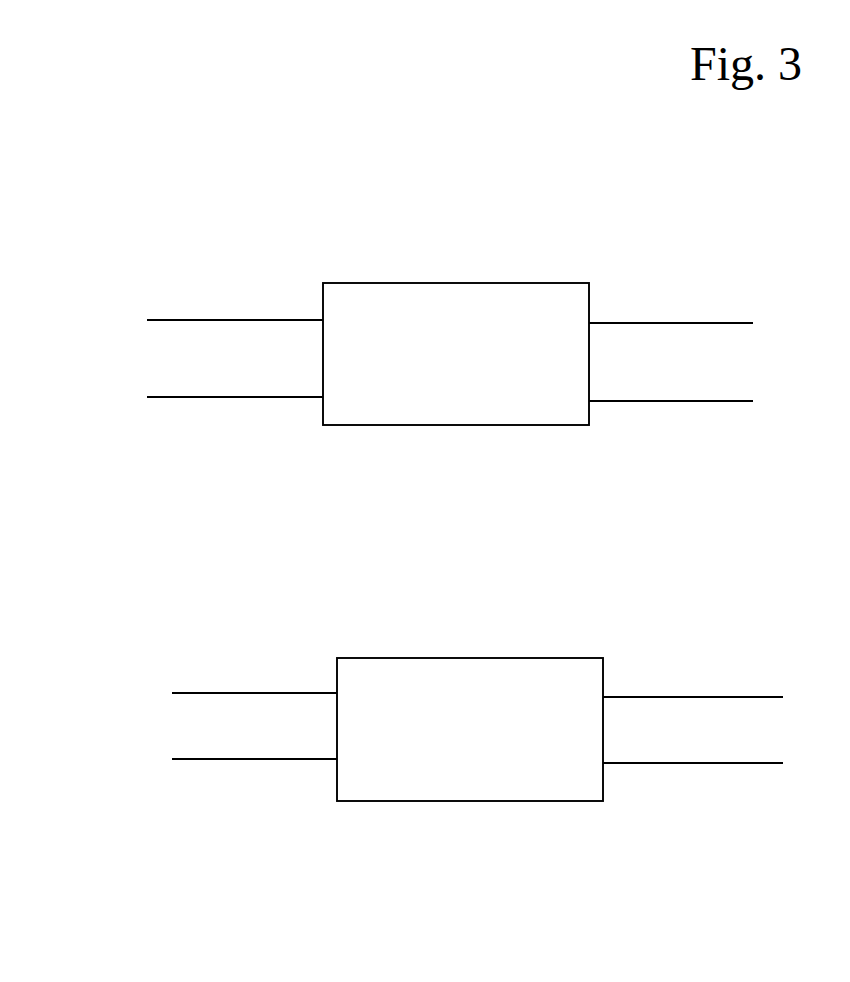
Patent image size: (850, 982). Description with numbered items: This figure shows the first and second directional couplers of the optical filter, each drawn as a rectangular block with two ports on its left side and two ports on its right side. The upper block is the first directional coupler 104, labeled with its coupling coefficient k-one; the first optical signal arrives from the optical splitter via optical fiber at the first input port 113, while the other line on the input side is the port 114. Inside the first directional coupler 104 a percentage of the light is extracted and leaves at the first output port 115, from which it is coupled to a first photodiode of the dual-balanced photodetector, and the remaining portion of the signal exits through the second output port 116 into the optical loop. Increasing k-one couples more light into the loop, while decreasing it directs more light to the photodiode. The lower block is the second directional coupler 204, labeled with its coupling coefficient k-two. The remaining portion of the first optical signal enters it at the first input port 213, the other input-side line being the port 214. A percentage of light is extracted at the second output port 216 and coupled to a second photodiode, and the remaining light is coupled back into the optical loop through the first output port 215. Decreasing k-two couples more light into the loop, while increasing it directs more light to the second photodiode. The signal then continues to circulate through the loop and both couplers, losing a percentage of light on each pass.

The first directional coupler 104 is at (450, 282).
The first input port 113 is at (235, 319).
The second input line of first filter 114 is at (235, 398).
The first output port 115 is at (718, 323).
The second output port 116 is at (702, 402).
The second directional coupler 204 is at (476, 657).
The first input port 213 is at (223, 693).
The second input line of second filter 214 is at (225, 760).
The first output port 215 is at (718, 697).
The second output port 216 is at (719, 764).